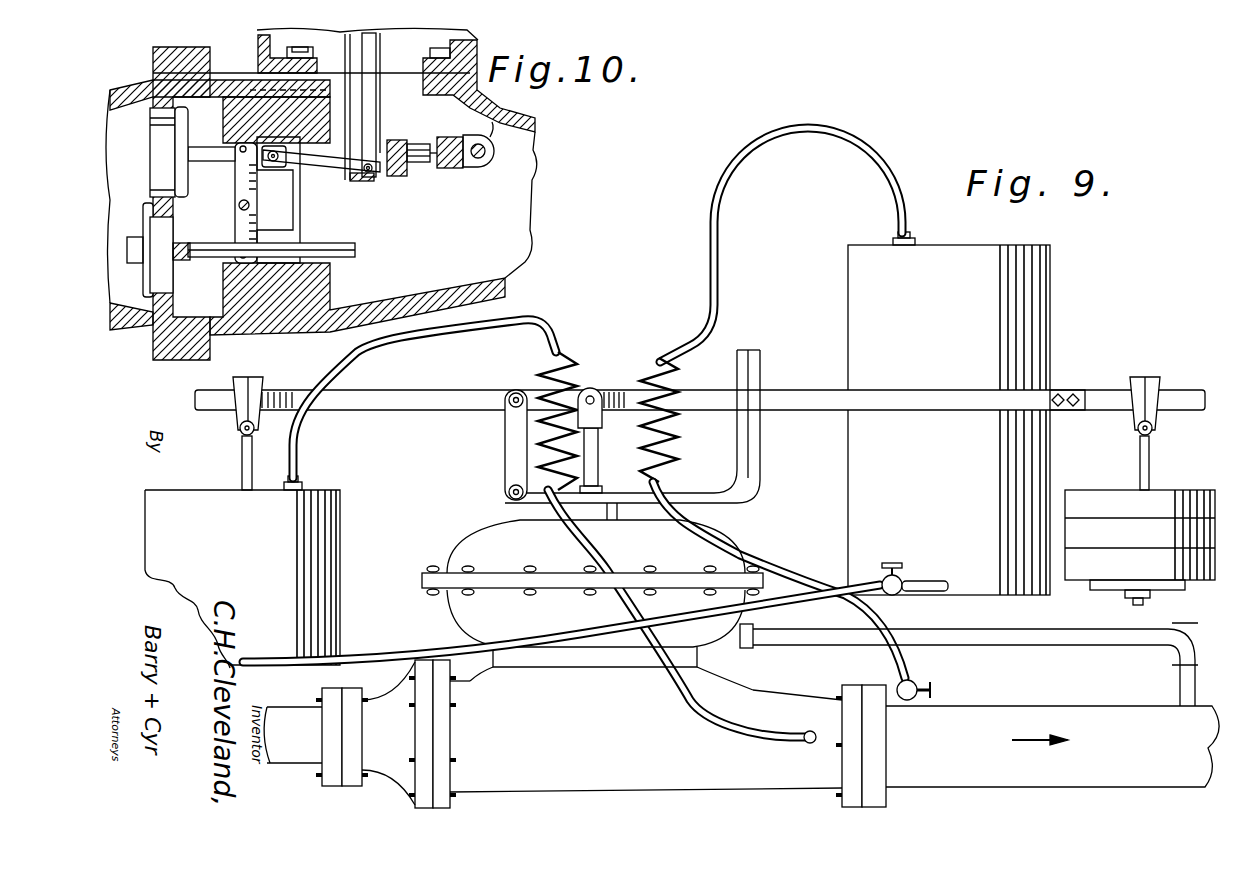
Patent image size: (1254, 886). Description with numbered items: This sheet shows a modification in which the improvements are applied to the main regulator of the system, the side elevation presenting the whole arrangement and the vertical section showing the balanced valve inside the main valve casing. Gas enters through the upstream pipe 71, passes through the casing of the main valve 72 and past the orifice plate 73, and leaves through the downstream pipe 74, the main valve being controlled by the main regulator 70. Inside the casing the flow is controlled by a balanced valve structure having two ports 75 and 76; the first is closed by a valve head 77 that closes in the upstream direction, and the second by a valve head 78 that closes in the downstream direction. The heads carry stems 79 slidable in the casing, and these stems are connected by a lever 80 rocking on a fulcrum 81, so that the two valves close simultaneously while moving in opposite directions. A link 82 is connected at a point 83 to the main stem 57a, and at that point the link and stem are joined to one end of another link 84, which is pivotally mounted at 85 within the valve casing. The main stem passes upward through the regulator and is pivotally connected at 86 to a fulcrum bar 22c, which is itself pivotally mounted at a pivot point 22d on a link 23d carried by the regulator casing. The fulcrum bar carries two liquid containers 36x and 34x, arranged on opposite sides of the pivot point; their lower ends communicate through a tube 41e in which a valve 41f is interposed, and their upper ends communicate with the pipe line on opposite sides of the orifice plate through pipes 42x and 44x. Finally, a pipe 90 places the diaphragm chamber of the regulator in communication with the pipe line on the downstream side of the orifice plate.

In FIG. 9, the fulcrum bar 22c is at (402, 405).
In FIG. 9, the pivot point 22d is at (512, 392).
In FIG. 9, the link 23d is at (505, 460).
In FIG. 9, the liquid container 34x is at (850, 509).
In FIG. 9, the liquid container 36x is at (330, 558).
In FIG. 9, the tube 41e is at (393, 658).
In FIG. 9, the valve 41f is at (905, 580).
In FIG. 9, the pipe 42x is at (530, 325).
In FIG. 9, the pipe 44x is at (710, 295).
In FIG. 10, the main stem 57a is at (379, 97).
In FIG. 9, the main stem 57a is at (591, 487).
In FIG. 9, the main regulator 70 is at (468, 548).
In FIG. 9, the upstream pipe 71 is at (283, 720).
In FIG. 10, the casing of the main valve 72 is at (536, 122).
In FIG. 9, the casing of the main valve 72 is at (745, 702).
In FIG. 9, the orifice plate 73 is at (862, 686).
In FIG. 9, the downstream pipe 74 is at (1020, 722).
In FIG. 10, the port 75 is at (160, 170).
In FIG. 10, the port 76 is at (163, 283).
In FIG. 10, the valve head 77 is at (192, 120).
In FIG. 10, the valve head 78 is at (146, 225).
In FIG. 10, the stems 79 is at (218, 162).
In FIG. 10, the lever 80 is at (258, 195).
In FIG. 10, the fulcrum 81 is at (258, 214).
In FIG. 10, the link 82 is at (347, 130).
In FIG. 10, the point of connection 83 is at (380, 166).
In FIG. 10, the link 84 is at (425, 165).
In FIG. 10, the pivot 85 is at (495, 150).
In FIG. 9, the pivotal connection 86 is at (593, 389).
In FIG. 9, the pipe 90 is at (1073, 640).